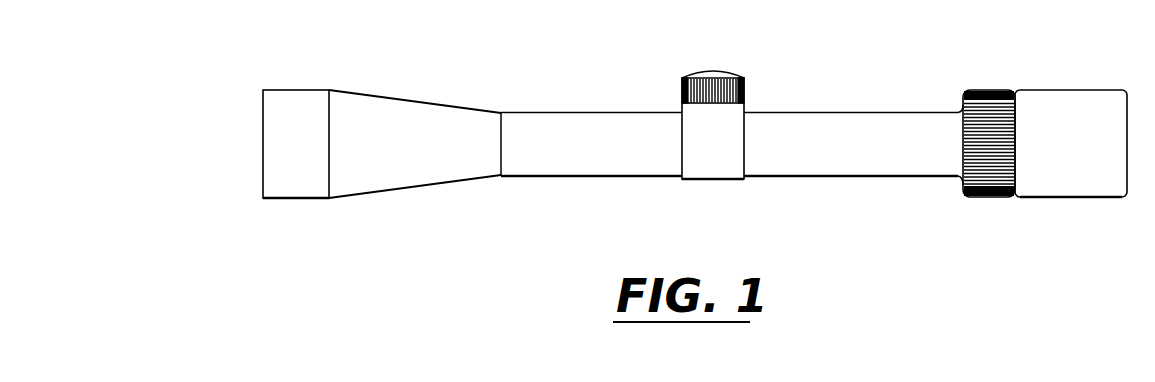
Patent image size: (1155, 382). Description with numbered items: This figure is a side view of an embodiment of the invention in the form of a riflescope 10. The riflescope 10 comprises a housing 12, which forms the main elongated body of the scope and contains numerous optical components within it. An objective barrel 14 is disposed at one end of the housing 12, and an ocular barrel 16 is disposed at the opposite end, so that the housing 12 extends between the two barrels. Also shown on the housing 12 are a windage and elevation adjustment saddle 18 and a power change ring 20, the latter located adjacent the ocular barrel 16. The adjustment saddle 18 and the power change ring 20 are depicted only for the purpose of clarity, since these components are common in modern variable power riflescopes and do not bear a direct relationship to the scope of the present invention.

The riflescope 10 is at (540, 89).
The housing 12 is at (851, 113).
The objective barrel 14 is at (292, 198).
The ocular barrel 16 is at (1083, 197).
The windage and elevation adjustment saddle 18 is at (720, 180).
The power change ring 20 is at (988, 197).